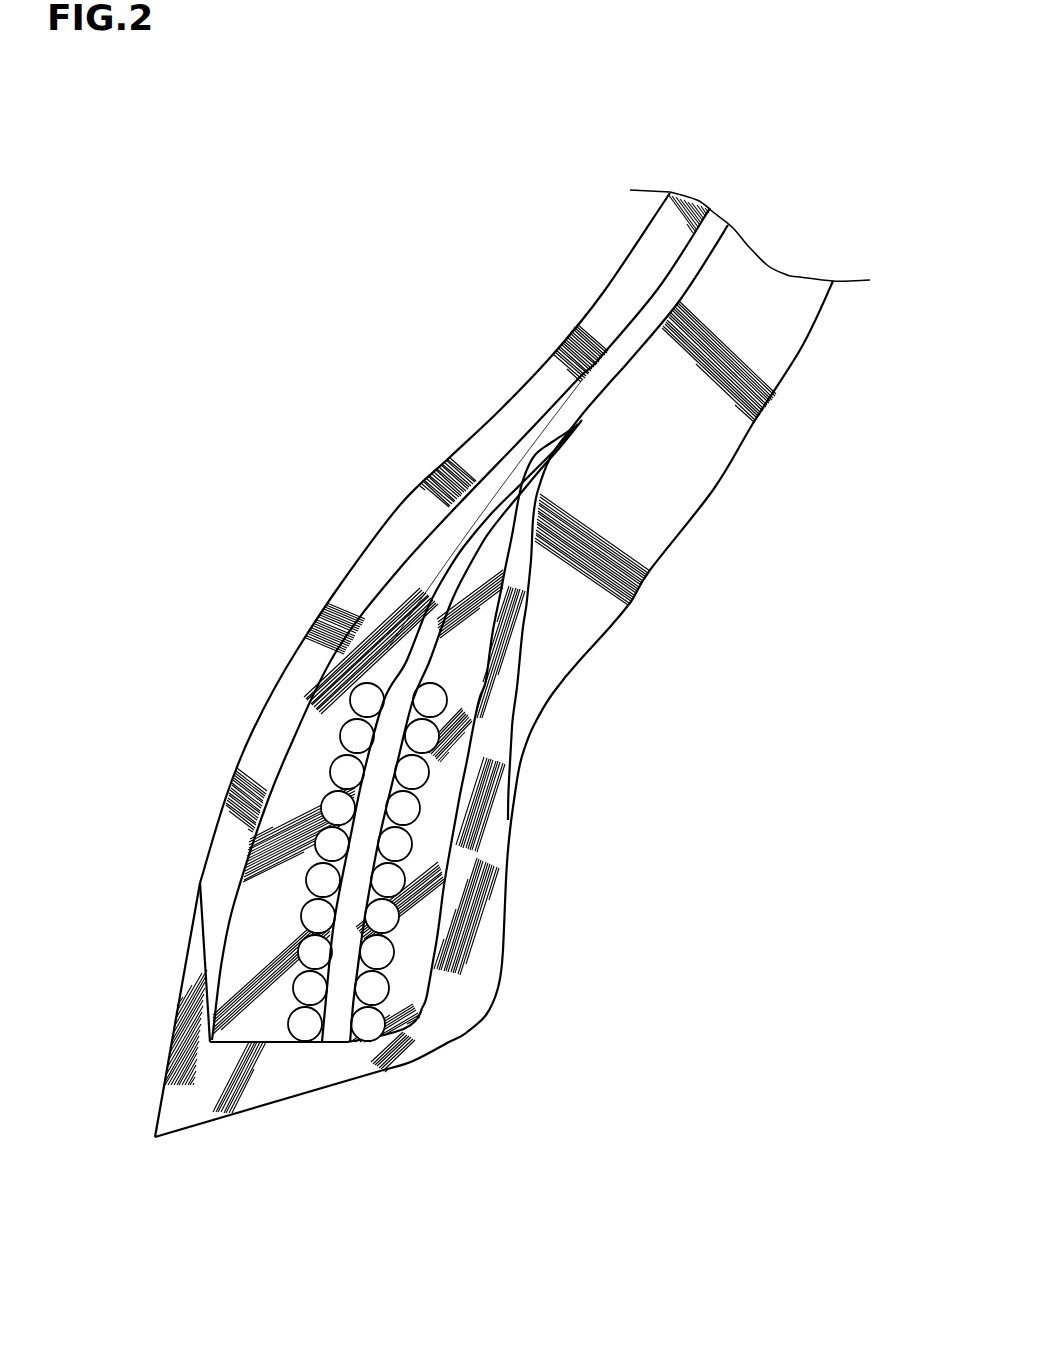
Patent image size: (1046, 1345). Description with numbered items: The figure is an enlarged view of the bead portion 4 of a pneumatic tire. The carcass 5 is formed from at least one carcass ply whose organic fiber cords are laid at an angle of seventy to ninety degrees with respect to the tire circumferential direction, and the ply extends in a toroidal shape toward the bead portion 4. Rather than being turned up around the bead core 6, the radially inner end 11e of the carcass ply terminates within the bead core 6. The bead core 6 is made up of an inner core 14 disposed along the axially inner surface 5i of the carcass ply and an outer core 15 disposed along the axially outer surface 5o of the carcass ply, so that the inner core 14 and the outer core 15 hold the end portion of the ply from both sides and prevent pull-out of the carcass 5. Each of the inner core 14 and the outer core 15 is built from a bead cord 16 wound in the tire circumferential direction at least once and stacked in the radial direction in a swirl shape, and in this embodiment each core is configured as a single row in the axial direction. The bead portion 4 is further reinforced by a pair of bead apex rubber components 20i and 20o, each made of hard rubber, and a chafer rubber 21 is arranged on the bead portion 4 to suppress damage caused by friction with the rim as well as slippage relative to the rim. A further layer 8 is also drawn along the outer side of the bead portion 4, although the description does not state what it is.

The bead portion 4 is at (498, 988).
The carcass 5 is at (620, 385).
The axially inner surface of the carcass ply 5i is at (360, 822).
The axially outer surface of the carcass ply 5o is at (343, 877).
The bead core 6 is at (396, 956).
The chafer / reinforcing layer 8 is at (463, 468).
The radially inner end of the carcass ply 11e is at (340, 957).
The inner core 14 is at (300, 1043).
The outer core 15 is at (353, 1043).
The bead cord 16 is at (396, 928).
The bead apex rubber component 20i is at (383, 630).
The bead apex rubber component 20o is at (472, 650).
The chafer rubber 21 is at (197, 1078).